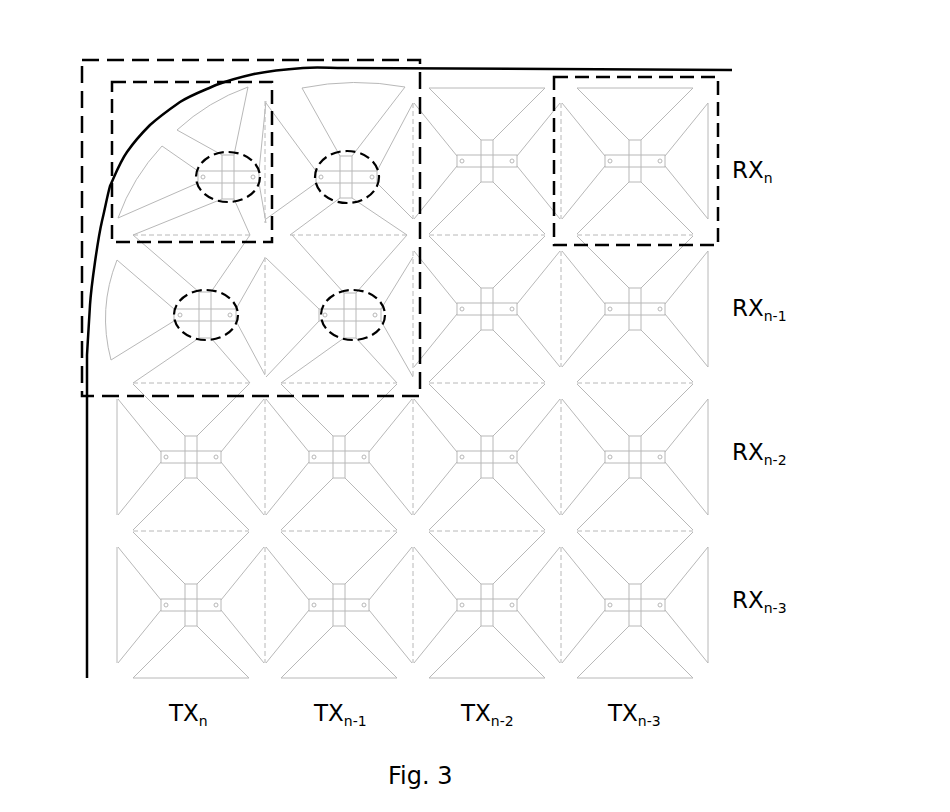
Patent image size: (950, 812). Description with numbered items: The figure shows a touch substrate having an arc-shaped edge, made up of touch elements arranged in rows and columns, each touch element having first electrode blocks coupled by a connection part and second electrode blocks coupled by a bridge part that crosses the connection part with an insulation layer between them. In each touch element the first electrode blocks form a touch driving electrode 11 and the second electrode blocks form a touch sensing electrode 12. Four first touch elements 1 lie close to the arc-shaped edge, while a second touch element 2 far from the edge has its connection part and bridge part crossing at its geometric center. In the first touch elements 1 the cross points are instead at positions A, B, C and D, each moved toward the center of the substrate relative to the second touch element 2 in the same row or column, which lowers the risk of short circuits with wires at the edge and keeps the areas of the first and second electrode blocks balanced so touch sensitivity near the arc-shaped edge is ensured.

The first touch element 1 is at (112, 131).
The second touch element 2 is at (717, 100).
The touch driving electrode 11 is at (668, 133).
The touch sensing electrode 12 is at (693, 175).
The position A is at (192, 161).
The position B is at (339, 159).
The position C is at (185, 309).
The position D is at (339, 309).